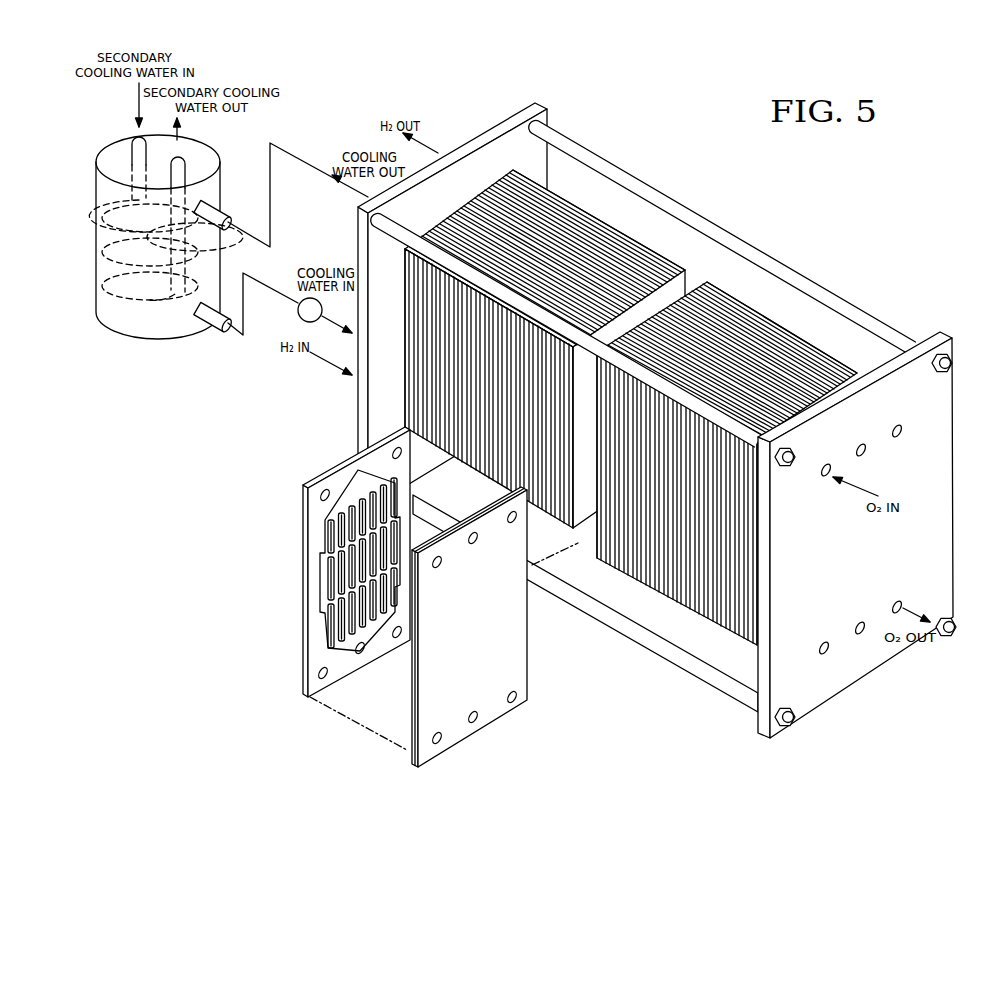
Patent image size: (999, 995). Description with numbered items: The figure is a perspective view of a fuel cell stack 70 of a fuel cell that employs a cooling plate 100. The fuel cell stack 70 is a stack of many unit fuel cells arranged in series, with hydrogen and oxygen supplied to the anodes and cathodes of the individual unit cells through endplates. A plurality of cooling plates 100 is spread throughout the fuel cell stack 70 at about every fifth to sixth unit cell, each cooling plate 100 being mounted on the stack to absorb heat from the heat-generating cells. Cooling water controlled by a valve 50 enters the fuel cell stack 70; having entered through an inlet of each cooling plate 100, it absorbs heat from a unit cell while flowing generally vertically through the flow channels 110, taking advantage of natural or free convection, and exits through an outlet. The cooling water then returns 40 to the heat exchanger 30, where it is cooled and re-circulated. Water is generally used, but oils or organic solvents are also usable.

The heat exchanger 30 is at (100, 338).
The cooling water return 40 is at (310, 160).
The valve 50 is at (298, 306).
The fuel cell stack 70 is at (588, 636).
The cooling plate 100 is at (456, 431).
The flow channels 110 is at (320, 574).